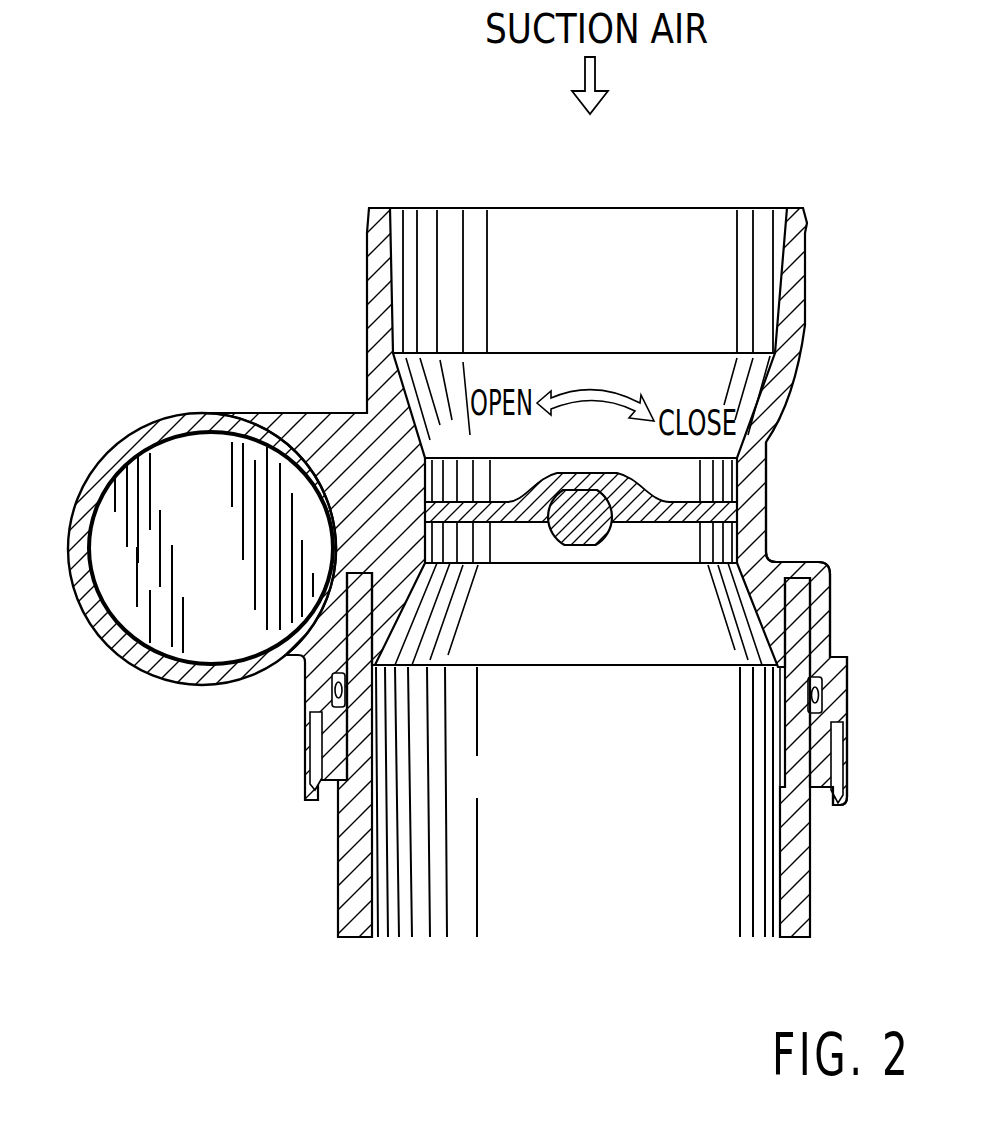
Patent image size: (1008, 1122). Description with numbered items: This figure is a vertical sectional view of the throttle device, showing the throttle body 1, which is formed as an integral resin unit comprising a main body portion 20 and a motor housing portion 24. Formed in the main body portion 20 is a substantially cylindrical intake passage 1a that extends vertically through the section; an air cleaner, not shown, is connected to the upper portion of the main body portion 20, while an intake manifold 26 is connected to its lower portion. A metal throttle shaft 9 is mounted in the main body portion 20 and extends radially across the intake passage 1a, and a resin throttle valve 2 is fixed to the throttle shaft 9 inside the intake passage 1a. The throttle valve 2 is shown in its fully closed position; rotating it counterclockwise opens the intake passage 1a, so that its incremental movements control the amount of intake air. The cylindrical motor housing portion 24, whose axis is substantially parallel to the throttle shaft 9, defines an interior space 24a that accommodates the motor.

The throttle body 1 is at (808, 304).
The intake passage 1a is at (727, 266).
The throttle valve 2 is at (473, 528).
The throttle shaft 9 is at (598, 522).
The main body portion 20 is at (768, 490).
The motor housing portion 24 is at (110, 460).
The space 24a is at (194, 469).
The intake manifold 26 is at (337, 895).